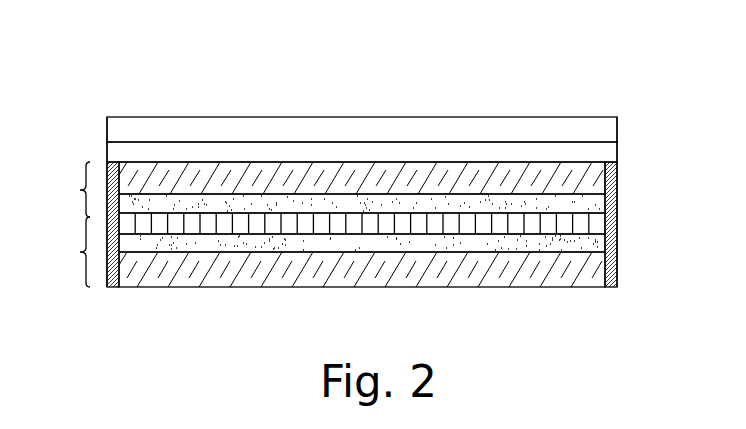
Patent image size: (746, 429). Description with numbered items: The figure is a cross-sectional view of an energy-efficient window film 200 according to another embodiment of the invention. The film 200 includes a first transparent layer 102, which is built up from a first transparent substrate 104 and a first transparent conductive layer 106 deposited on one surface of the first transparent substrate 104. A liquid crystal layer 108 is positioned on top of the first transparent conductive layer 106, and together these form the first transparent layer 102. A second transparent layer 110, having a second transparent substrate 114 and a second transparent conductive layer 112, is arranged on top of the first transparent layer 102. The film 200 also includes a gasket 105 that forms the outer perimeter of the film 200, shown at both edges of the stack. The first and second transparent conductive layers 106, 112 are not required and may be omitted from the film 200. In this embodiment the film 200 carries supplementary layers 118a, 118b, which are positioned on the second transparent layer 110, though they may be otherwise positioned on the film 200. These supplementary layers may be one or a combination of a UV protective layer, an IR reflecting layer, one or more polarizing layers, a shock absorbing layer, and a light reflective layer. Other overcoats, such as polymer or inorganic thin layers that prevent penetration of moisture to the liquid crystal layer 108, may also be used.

The film 200 is at (485, 60).
The supplementary layer 118a is at (603, 128).
The supplementary layer 118b is at (606, 150).
The second transparent substrate 114 is at (597, 178).
The second transparent conductive layer 112 is at (605, 204).
The liquid crystal layer 108 is at (605, 228).
The first transparent conductive layer 106 is at (605, 249).
The first transparent substrate 104 is at (600, 274).
The gasket 105 is at (108, 288).
The second transparent layer 110 is at (59, 189).
The first transparent layer 102 is at (59, 252).